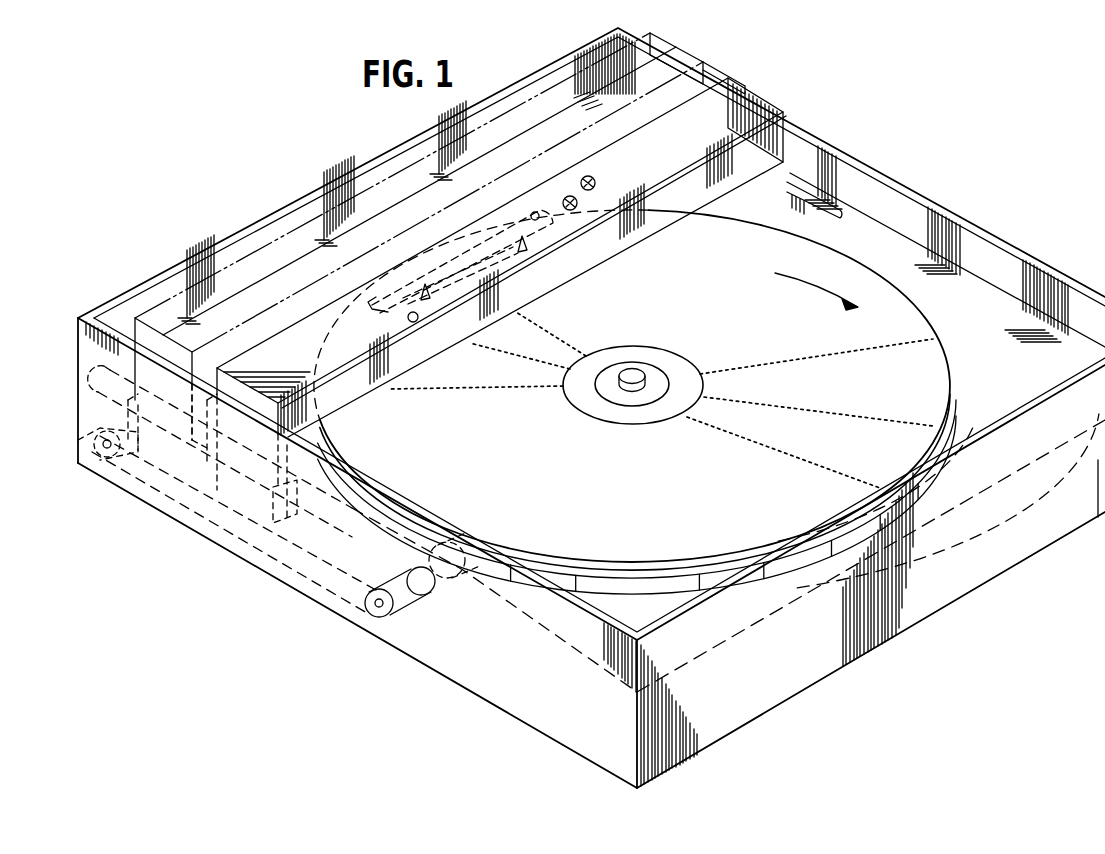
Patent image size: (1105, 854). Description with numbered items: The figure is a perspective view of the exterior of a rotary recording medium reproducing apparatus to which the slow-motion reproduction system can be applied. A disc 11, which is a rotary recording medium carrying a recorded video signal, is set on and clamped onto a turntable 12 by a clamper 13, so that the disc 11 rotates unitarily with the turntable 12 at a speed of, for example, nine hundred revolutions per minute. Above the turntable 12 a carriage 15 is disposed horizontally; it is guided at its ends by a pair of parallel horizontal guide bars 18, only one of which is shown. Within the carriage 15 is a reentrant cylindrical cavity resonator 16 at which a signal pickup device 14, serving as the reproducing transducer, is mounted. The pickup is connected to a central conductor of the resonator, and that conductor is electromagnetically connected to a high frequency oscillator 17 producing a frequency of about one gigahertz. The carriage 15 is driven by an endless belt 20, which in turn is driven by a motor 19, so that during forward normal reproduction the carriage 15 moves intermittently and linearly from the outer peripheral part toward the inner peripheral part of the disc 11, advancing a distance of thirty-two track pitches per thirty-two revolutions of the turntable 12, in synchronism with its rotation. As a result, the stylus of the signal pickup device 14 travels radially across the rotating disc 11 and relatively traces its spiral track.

The disc 11 is at (938, 375).
The turntable 12 is at (617, 592).
The clamper 13 is at (617, 398).
The signal pickup device 14 is at (462, 290).
The carriage 15 is at (386, 188).
The reentrant cylindrical cavity resonator 16 is at (558, 272).
The high frequency oscillator 17 is at (687, 200).
The guide bars 18 is at (308, 521).
The motor 19 is at (459, 550).
The endless belt 20 is at (339, 563).